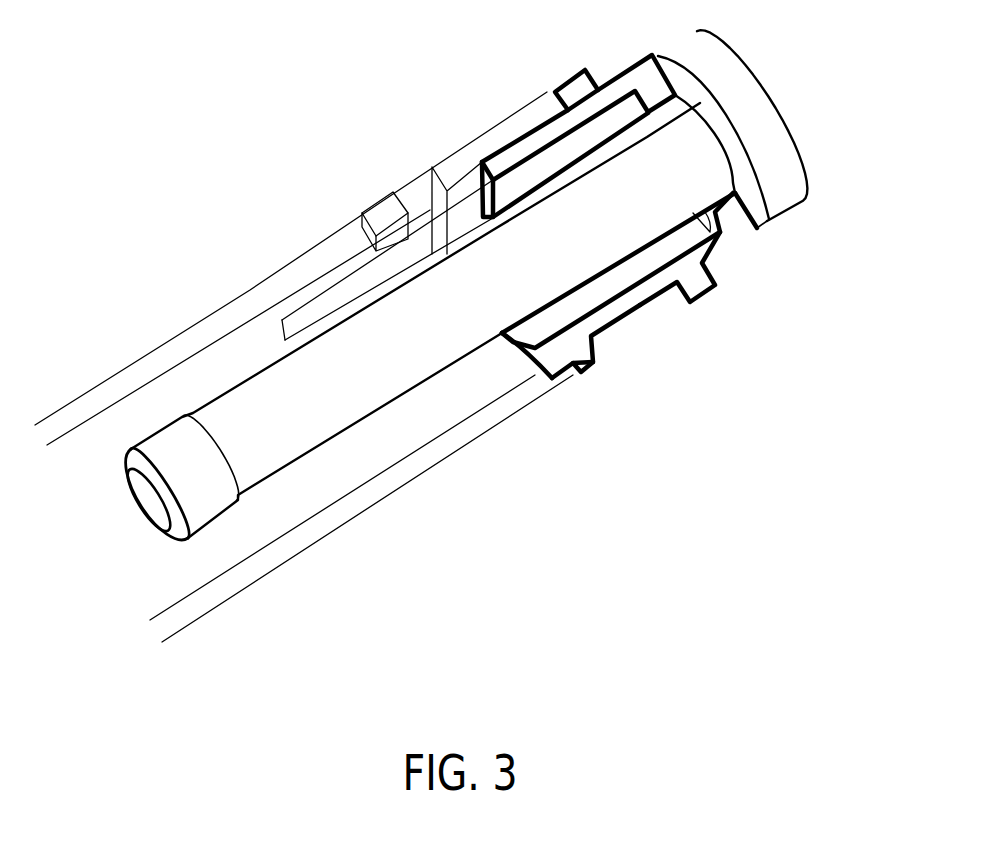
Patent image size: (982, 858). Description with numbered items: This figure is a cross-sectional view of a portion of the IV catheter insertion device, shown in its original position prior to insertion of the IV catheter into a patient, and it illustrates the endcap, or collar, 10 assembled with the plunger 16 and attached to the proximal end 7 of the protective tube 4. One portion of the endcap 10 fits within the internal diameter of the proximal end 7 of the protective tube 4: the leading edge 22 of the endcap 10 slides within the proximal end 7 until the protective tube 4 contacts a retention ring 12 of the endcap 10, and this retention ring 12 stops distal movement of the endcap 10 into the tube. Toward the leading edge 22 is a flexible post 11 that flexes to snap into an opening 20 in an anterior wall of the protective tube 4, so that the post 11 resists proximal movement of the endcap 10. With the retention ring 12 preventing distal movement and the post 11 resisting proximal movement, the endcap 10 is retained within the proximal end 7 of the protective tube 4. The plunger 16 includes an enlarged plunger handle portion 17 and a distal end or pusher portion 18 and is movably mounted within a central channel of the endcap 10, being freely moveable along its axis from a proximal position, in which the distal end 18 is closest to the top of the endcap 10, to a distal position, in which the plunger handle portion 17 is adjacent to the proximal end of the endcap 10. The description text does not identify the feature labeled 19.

The protective tube 4 is at (138, 377).
The proximal end 7 is at (243, 565).
The endcap 10 is at (620, 72).
The flexible post 11 is at (563, 375).
The retention ring 12 is at (697, 315).
The plunger 16 is at (313, 365).
The plunger handle portion 17 is at (773, 97).
The distal end or pusher portion 18 is at (129, 460).
The stop block 19 is at (422, 210).
The opening 20 is at (575, 368).
The leading edge 22 is at (528, 367).